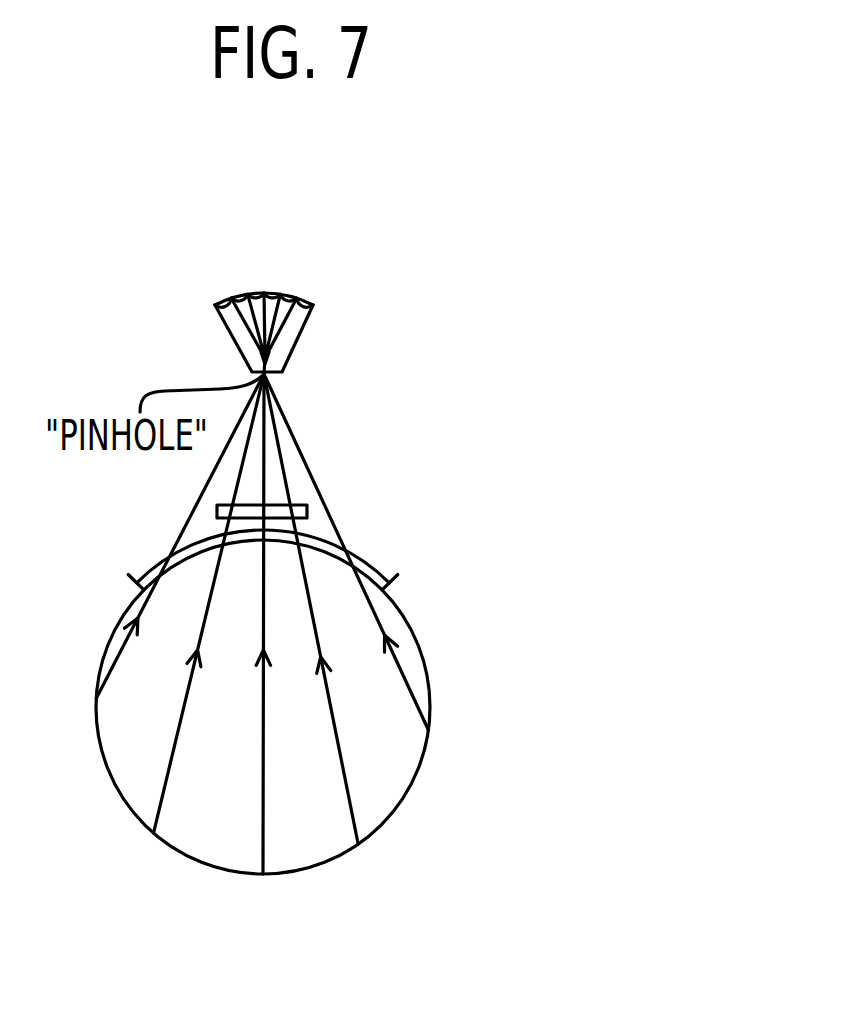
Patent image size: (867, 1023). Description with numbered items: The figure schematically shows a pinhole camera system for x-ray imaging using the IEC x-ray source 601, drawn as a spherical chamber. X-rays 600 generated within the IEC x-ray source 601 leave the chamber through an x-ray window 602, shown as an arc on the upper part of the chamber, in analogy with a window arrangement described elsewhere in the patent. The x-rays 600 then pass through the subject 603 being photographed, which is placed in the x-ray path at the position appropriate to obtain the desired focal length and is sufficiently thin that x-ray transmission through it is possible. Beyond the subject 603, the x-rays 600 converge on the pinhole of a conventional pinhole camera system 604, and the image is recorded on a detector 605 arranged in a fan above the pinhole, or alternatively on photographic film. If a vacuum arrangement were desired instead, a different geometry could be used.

The x-ray beams / system 600 is at (353, 815).
The IEC chamber 601 is at (427, 650).
The x-ray window 602 is at (390, 572).
The subject 603 is at (272, 499).
The camera 604 is at (402, 353).
The detectors 605 is at (265, 293).